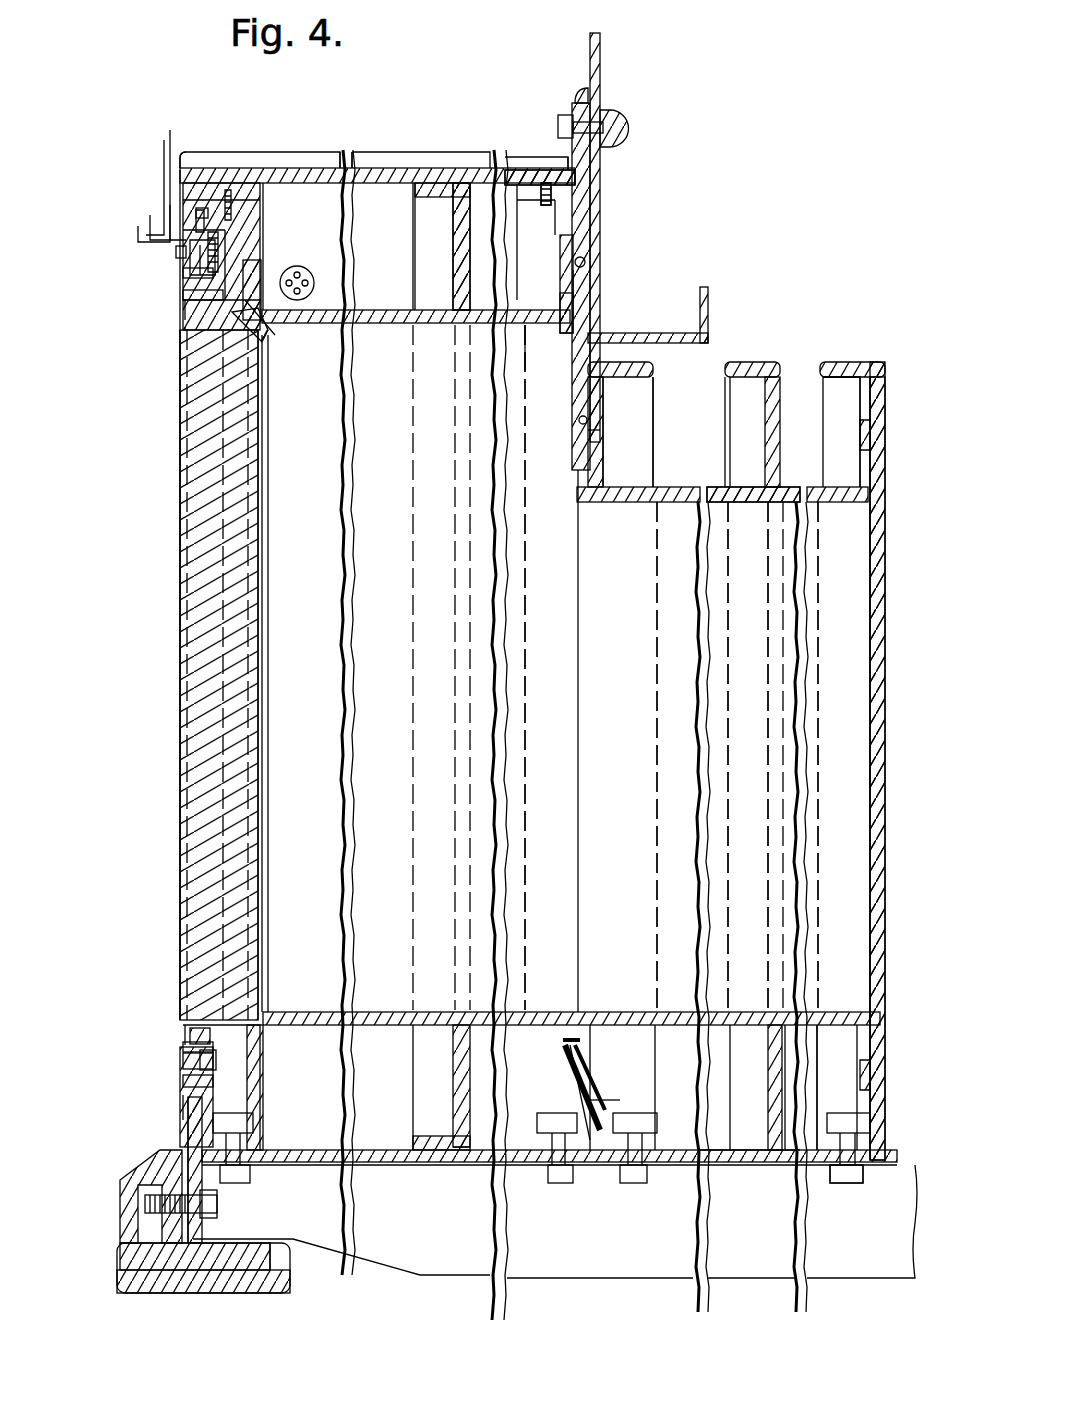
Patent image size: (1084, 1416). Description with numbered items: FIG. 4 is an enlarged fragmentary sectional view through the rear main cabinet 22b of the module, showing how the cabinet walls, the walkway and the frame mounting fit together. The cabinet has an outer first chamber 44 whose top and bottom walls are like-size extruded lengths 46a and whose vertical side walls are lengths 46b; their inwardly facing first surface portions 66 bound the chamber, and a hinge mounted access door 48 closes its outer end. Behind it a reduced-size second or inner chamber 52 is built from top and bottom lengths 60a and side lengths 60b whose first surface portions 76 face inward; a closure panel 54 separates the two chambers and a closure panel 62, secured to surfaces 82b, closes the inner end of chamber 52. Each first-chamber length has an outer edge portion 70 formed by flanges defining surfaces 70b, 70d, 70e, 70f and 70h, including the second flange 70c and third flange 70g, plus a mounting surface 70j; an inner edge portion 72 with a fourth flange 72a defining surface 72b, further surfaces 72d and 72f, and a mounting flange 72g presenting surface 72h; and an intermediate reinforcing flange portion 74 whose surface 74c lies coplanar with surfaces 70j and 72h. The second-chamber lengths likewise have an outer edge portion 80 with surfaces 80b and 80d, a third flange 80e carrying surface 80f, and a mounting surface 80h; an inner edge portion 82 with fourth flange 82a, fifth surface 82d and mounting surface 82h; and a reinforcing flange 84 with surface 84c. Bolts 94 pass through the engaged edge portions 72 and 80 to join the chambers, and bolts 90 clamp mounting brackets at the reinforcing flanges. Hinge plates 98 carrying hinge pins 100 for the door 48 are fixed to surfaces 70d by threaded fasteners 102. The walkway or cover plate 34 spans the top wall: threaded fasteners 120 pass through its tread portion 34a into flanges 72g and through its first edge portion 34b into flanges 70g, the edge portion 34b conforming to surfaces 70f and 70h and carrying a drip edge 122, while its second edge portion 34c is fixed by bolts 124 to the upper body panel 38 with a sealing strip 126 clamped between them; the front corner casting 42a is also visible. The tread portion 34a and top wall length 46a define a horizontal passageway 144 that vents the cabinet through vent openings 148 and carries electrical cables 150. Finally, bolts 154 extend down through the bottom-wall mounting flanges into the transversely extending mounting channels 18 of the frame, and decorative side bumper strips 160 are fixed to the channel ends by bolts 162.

The mounting channel 18 is at (660, 1263).
The main vehicle side opening cabinet 22b is at (168, 413).
The walkway or cover plate 34 is at (295, 167).
The walkway tread portion 34a is at (505, 160).
The walkway first edge portion 34b is at (183, 168).
The walkway second edge portion 34c is at (570, 115).
The upper body panel 38 is at (600, 45).
The front corner casting 42a is at (333, 154).
The first or outer chamber 44 is at (300, 522).
The top and bottom wall length 46a is at (330, 326).
The side wall length 46b is at (365, 664).
The hinge mounted access door 48 is at (170, 762).
The second or inner chamber 52 is at (835, 632).
The closure panel 54 is at (602, 351).
The top and bottom wall length 60a is at (700, 505).
The side wall length 60b is at (675, 780).
The closure panel 62 is at (780, 540).
The first surface portion 66 is at (340, 325).
The first or outer edge portion 70 is at (225, 173).
The first surface 70b is at (320, 250).
The second part or flange 70c is at (238, 264).
The second surface 70d is at (180, 290).
The third surface 70e is at (185, 265).
The fourth surface 70f is at (175, 230).
The third part or flange 70g is at (183, 247).
The fifth surface 70h is at (155, 213).
The ninth surface 70j is at (252, 170).
The second or inner edge portion 72 is at (592, 178).
The fourth part or flange 72a is at (575, 295).
The sixth surface 72b is at (580, 282).
The seventh surface 72d is at (585, 264).
The eighth surface 72f is at (605, 1092).
The eighth part or mounting flange 72g is at (545, 213).
The tenth surface 72h is at (530, 170).
The reinforcing flange portion 74 is at (460, 170).
The eleventh surface 74c is at (460, 180).
The first surface portion 76 is at (585, 508).
The first or outer edge portion 80 is at (655, 470).
The first surface 80b is at (548, 667).
The second surface 80d is at (592, 440).
The third part or flange 80e is at (653, 397).
The third surface 80f is at (580, 410).
The seventh surface 80h is at (655, 1162).
The second or inner edge portion 82 is at (851, 355).
The fourth part or flange 82a is at (850, 430).
The fourth surface 82b is at (860, 452).
The fifth surface 82d is at (875, 430).
The eighth surface 82h is at (870, 1170).
The reinforcing flange 84 is at (760, 360).
The ninth surface 84c is at (762, 1165).
The bolt 90 is at (270, 242).
The bolt 94 is at (600, 1045).
The plate 98 is at (182, 1047).
The hinge pin 100 is at (185, 310).
The threaded fastener 102 is at (232, 245).
The threaded fastener 120 is at (215, 178).
The drip edge 122 is at (138, 235).
The bolt 124 is at (623, 128).
The sealing strip 126 is at (580, 85).
The passageway or channel 144 is at (445, 215).
The vent opening 148 is at (540, 355).
The electrical cable 150 is at (272, 333).
The bolt 154 is at (237, 1182).
The decorative side bumper strip 160 is at (115, 1245).
The bolt 162 is at (210, 1288).